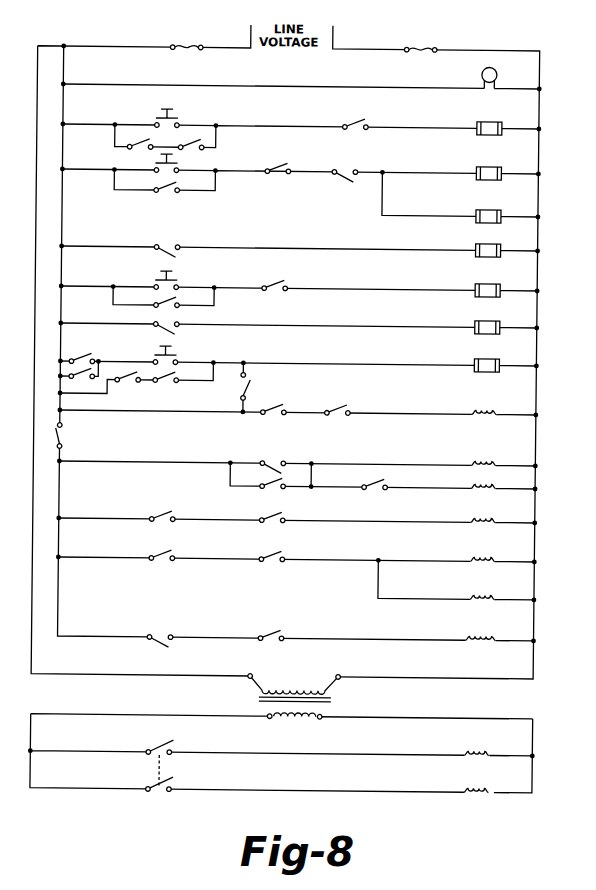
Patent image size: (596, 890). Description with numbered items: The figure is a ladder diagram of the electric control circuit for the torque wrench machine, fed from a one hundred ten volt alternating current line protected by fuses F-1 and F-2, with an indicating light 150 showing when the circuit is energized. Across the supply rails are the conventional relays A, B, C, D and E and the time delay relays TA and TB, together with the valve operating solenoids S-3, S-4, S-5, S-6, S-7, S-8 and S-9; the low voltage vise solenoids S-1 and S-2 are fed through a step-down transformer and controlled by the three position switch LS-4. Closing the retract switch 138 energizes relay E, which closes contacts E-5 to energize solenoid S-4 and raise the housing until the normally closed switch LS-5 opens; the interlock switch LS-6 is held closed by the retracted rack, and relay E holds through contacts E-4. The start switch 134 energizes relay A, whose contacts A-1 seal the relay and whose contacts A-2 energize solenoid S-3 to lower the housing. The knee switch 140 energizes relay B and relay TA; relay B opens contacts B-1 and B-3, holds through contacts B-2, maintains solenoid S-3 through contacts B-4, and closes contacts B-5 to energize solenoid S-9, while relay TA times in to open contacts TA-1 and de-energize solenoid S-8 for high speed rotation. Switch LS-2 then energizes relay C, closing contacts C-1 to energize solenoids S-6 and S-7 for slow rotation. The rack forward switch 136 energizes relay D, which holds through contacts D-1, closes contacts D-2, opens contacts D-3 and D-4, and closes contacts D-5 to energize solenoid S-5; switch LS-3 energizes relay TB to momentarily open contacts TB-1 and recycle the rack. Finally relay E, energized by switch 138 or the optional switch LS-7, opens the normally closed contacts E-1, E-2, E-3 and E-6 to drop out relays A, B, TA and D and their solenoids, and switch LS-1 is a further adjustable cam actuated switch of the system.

The fuse F-1 is at (186, 59).
The fuse F-2 is at (420, 61).
The indicating light 150 is at (496, 71).
The start switch 134 is at (177, 113).
The knee switch 140 is at (151, 165).
The rack forward switch 136 is at (178, 275).
The retract or end of cycle switch 138 is at (176, 350).
The relay A is at (500, 120).
The relay B is at (501, 164).
The time delay relay TA is at (501, 207).
The relay C is at (500, 243).
The relay D is at (500, 283).
The time delay relay TB is at (500, 320).
The relay E is at (500, 358).
The relay A contacts A-1 is at (127, 146).
The relay A contacts A-2 is at (285, 460).
The relay B contacts B-1 is at (202, 150).
The relay B contacts B-2 is at (152, 194).
The relay B contacts B-3 is at (98, 356).
The relay B contacts B-4 is at (264, 487).
The relay B contacts B-5 is at (392, 486).
The relay C contacts C-1 is at (287, 554).
The relay D contacts D-1 is at (153, 302).
The relay D contacts D-2 is at (80, 378).
The relay D contacts D-3 is at (171, 514).
The relay D contacts D-4 is at (178, 553).
The relay D contacts D-5 is at (175, 629).
The relay E contacts E-1 is at (367, 117).
The relay E contacts E-2 is at (266, 185).
The relay E contacts E-3 is at (286, 282).
The relay E contacts E-4 is at (175, 383).
The relay E contacts E-5 is at (286, 410).
The relay E contacts E-6 is at (64, 440).
The time delay relay TA contacts TA-1 is at (287, 516).
The time delay relay TB contacts TB-1 is at (290, 631).
The cam actuated switch LS-1 is at (339, 171).
The cam actuated switch LS-2 is at (169, 242).
The switch LS-3 is at (171, 325).
The cam actuated switch LS-4 is at (166, 769).
The cam actuated switch LS-5 is at (129, 384).
The interlock switch LS-6 is at (337, 416).
The switch LS-7 is at (254, 394).
The valve operating solenoid S-1 is at (496, 748).
The valve operating solenoid S-2 is at (496, 785).
The valve operating solenoid S-3 is at (496, 459).
The valve operating solenoid S-4 is at (496, 407).
The rack operating solenoid S-5 is at (494, 633).
The valve operating solenoid S-6 is at (496, 558).
The valve operating solenoid S-7 is at (496, 595).
The valve operating solenoid S-8 is at (496, 520).
The valve operating solenoid S-9 is at (496, 484).